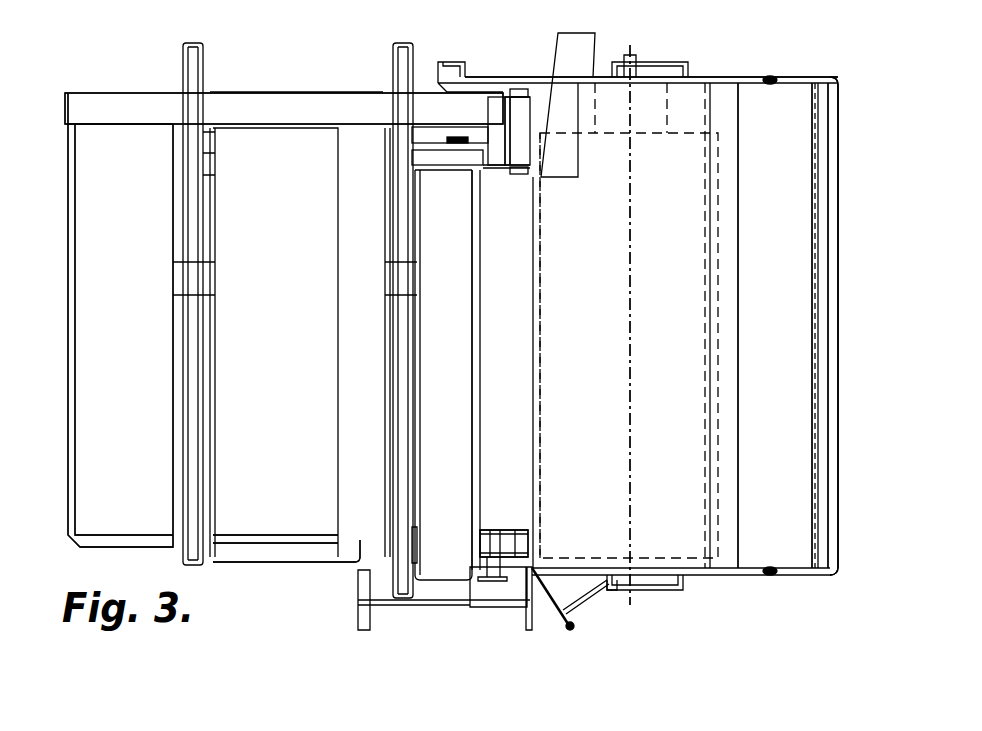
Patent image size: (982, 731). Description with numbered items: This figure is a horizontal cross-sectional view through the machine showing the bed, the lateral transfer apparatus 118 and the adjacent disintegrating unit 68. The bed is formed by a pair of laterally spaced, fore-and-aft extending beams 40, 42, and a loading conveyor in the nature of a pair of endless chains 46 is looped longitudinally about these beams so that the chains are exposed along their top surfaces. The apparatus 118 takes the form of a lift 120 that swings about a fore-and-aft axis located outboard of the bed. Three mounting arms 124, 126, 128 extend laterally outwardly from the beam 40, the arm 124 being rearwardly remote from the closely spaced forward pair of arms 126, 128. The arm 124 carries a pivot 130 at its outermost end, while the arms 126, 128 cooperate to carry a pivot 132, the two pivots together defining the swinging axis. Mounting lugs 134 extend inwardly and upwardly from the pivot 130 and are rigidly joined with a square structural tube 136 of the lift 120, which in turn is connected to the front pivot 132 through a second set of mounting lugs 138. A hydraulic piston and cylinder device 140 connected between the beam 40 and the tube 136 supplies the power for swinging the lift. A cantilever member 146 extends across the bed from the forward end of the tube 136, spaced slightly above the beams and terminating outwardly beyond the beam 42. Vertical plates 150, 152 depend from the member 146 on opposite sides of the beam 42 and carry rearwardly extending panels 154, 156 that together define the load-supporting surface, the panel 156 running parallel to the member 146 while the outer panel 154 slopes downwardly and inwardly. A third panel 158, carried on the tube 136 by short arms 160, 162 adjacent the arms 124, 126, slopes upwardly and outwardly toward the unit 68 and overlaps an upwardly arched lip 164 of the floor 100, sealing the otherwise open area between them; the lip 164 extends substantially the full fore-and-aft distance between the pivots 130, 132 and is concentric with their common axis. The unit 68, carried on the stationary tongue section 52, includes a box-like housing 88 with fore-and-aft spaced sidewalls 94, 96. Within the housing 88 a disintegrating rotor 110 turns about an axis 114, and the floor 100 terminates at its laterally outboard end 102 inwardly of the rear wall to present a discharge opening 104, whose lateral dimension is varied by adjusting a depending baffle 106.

The lateral transfer apparatus 118 is at (56, 98).
The cantilever member 146 is at (128, 108).
The vertical plate 150 is at (108, 132).
The lift 120 is at (56, 326).
The outer panel 154 is at (83, 457).
The beam 42 is at (204, 48).
The beam 40 is at (393, 48).
The endless chains 46 is at (197, 398).
The vertical plate 152 is at (277, 130).
The panel 156 is at (305, 523).
The hydraulic piston and cylinder device 140 is at (427, 134).
The short arm 162 is at (430, 176).
The mounting arm 126 is at (452, 158).
The third panel 158 is at (452, 313).
The mounting arm 124 is at (415, 543).
The square structural tube 136 is at (495, 140).
The pivot 132 is at (520, 146).
The mounting arm 128 is at (512, 109).
The mounting lugs 138 is at (505, 91).
The stationary section 52 is at (577, 41).
The sidewall 96 is at (697, 77).
The disintegrating unit 68 is at (763, 61).
The floor 100 is at (692, 108).
The disintegrating rotor 110 is at (718, 205).
The discharge opening 104 is at (775, 325).
The laterally outboard end 102 is at (742, 402).
The baffle 106 is at (830, 422).
The axis 114 is at (630, 402).
The lip 164 is at (518, 362).
The mounting lugs 134 is at (497, 530).
The pivot 130 is at (528, 545).
The short arm 160 is at (477, 580).
The sidewall 94 is at (655, 590).
The housing 88 is at (710, 574).